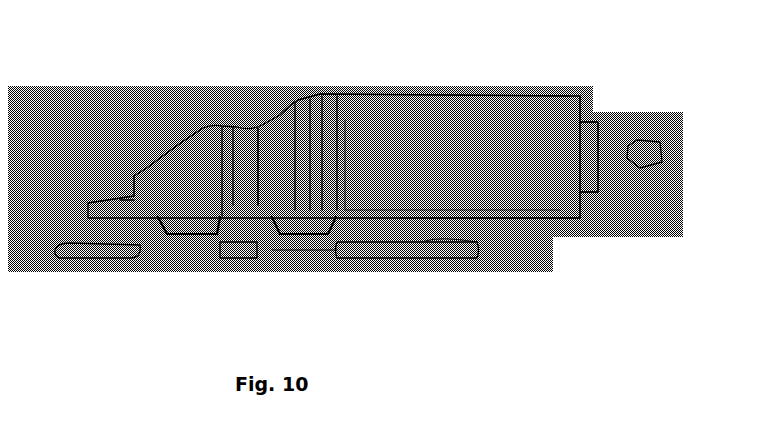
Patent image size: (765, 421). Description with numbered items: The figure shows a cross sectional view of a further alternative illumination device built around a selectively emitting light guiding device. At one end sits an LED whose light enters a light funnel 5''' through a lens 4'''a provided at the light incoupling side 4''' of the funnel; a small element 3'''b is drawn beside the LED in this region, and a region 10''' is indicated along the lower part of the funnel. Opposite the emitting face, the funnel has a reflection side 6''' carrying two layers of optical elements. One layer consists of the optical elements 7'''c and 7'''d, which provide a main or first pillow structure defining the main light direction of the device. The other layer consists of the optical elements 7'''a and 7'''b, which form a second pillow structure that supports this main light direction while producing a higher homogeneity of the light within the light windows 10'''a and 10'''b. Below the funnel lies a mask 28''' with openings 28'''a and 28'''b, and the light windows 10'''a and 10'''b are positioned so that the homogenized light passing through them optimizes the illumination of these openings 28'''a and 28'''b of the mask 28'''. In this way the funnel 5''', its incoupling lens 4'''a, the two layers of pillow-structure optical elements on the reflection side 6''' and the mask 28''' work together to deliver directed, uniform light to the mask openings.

The reflection side 6''' is at (89, 119).
The optical element 7'''a is at (162, 98).
The optical element 7'''b is at (286, 65).
The optical element 7'''c is at (190, 228).
The optical element 7'''d is at (239, 227).
The light funnel 5''' is at (445, 71).
The light incoupling side 4''' is at (593, 117).
The lens 4'''a is at (649, 118).
The rear element 3'''b is at (691, 178).
The light window 10'''a is at (86, 258).
The opening 28'''a is at (156, 279).
The opening 28'''b is at (301, 300).
The light window 10'''b is at (336, 283).
The mask 28''' is at (415, 286).
The underbody 10''' is at (490, 272).